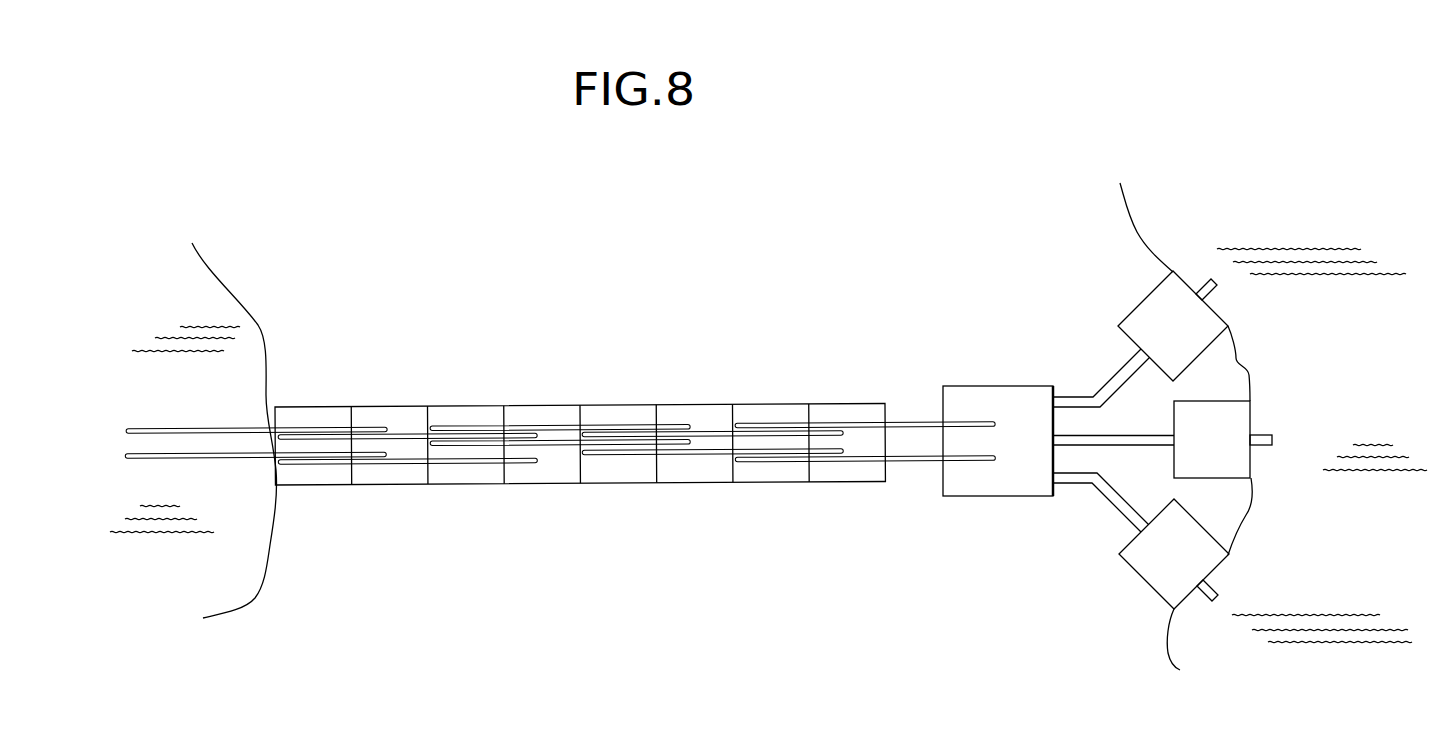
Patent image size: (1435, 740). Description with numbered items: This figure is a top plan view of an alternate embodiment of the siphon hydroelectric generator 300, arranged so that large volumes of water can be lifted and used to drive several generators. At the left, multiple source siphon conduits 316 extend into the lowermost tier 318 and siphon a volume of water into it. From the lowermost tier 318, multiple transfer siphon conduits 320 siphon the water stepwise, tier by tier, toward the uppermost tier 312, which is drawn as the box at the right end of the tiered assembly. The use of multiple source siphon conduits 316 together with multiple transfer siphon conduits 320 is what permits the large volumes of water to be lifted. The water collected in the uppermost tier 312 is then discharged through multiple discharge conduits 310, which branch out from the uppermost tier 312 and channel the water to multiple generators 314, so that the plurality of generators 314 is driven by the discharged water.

The siphon hydroelectric generator 300 is at (528, 227).
The discharge conduits 310 is at (1077, 485).
The uppermost tier 312 is at (978, 392).
The generators 314 is at (1195, 330).
The source siphon conduits 316 is at (218, 427).
The lowermost tier 318 is at (317, 407).
The transfer siphon conduits 320 is at (537, 423).